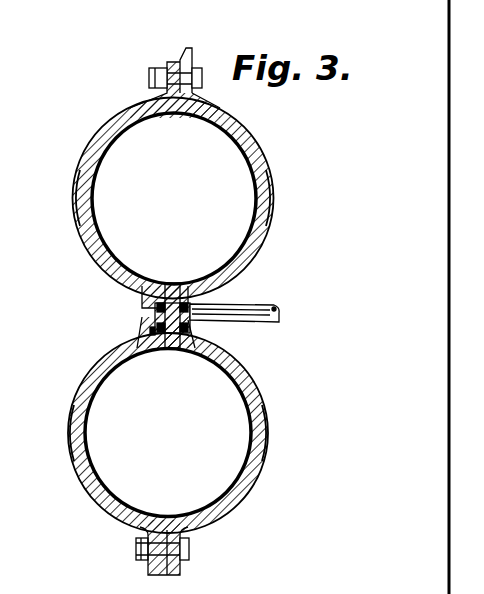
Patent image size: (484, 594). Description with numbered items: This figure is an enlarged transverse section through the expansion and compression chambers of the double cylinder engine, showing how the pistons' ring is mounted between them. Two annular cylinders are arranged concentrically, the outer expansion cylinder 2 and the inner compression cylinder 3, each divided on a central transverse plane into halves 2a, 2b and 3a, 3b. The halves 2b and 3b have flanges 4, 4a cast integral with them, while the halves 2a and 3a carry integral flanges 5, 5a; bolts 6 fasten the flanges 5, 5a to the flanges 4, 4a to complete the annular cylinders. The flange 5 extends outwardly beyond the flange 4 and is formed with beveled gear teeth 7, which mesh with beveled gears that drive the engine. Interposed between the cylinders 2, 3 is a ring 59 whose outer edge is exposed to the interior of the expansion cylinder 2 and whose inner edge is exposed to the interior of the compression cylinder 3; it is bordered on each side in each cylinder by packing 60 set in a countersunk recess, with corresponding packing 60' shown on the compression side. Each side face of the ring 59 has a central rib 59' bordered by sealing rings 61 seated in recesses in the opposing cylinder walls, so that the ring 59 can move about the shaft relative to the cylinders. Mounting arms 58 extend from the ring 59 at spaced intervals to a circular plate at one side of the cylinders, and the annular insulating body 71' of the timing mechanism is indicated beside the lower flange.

The expansion cylinder 2 is at (271, 159).
The half of cylinder 2 2a is at (268, 212).
The half of cylinder 2 2b is at (76, 232).
The compression cylinder 3 is at (277, 411).
The half of cylinder 3 3a is at (270, 457).
The half of cylinder 3 3b is at (71, 458).
The flange 4 is at (165, 70).
The flange 4a is at (148, 566).
The flange 5 is at (203, 70).
The flange 5a is at (190, 562).
The bolts 6 is at (149, 80).
The beveled gear teeth 7 is at (192, 50).
The mounting arms 58 is at (258, 312).
The ring 59 is at (180, 293).
The central rib 59' is at (170, 306).
The packing 60 is at (184, 277).
The lower washers 60' is at (166, 356).
The sealing ring 61 is at (156, 320).
The annular body of insulation 71' is at (25, 577).